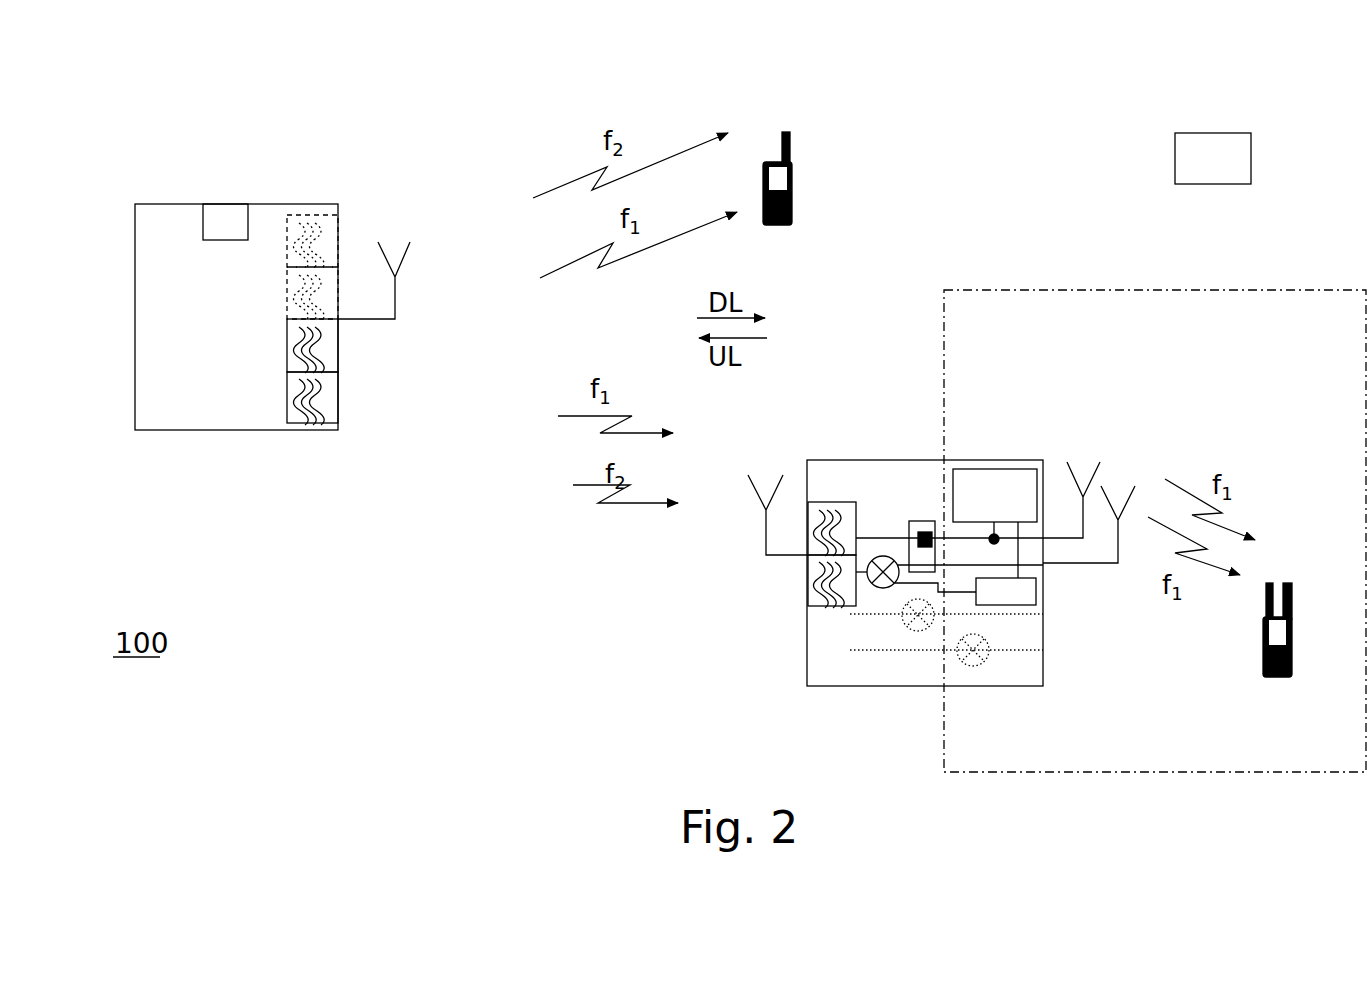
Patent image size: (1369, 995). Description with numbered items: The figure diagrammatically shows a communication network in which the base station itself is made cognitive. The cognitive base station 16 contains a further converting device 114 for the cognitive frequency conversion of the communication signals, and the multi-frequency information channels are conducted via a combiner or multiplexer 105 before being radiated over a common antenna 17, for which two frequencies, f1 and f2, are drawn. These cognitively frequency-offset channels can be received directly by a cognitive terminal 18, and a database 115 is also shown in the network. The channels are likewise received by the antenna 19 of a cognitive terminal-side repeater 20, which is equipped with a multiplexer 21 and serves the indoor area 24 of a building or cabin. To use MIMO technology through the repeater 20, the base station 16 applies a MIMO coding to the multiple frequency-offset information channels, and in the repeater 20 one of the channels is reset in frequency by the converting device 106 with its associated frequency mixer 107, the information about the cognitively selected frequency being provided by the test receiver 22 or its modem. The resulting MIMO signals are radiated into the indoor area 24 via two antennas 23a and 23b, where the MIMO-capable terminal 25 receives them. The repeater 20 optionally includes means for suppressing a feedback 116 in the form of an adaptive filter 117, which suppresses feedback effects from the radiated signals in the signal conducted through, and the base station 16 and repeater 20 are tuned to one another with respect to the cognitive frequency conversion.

The cognitive base station 16 is at (162, 196).
The converting device 114 is at (228, 213).
The multiplexer 105 is at (310, 417).
The antenna 17 is at (402, 232).
The cognitive terminal 18 is at (783, 122).
The database 115 is at (1226, 143).
The indoor area 24 is at (1069, 283).
The cognitive terminal-side repeater 20 is at (868, 695).
The multiplexer 21 is at (820, 614).
The antenna 19 is at (768, 468).
The frequency mixer 107 is at (880, 556).
The means for suppressing a feedback 116 is at (913, 521).
The adaptive filter 117 is at (926, 521).
The test receiver 22 is at (1012, 469).
The converting device 106 is at (1038, 600).
The antenna 23a is at (1085, 452).
The antenna 23b is at (1118, 470).
The MIMO-capable terminal 25 is at (1285, 575).